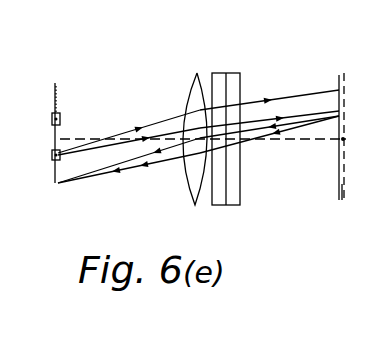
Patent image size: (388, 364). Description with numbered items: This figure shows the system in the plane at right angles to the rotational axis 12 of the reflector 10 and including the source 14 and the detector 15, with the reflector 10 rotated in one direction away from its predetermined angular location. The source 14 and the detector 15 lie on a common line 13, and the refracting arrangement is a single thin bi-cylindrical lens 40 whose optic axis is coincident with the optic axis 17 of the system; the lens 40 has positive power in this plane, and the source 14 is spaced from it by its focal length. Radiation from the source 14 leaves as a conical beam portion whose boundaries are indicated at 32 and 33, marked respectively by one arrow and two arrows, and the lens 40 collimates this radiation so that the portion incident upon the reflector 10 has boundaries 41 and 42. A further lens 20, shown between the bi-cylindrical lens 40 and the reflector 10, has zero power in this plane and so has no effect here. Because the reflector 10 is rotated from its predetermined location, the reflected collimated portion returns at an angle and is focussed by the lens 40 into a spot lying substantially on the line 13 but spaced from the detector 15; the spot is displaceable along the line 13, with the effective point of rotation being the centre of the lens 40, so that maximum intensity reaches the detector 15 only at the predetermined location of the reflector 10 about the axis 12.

The reflector 10 is at (339, 199).
The rotational axis 12 is at (343, 140).
The line including the source and the detector 13 is at (55, 183).
The source 14 is at (54, 161).
The detector 15 is at (52, 113).
The optic axis 17 is at (273, 142).
The lens 20 is at (233, 73).
The boundary of the conical beam portion 32 is at (155, 122).
The boundary of the conical beam portion 33 is at (93, 152).
The bi-cylindrical lens 40 is at (197, 73).
The boundary of the collimated beam portion incident upon the reflector 41 is at (321, 92).
The boundary of the collimated beam portion incident upon the reflector 42 is at (293, 121).